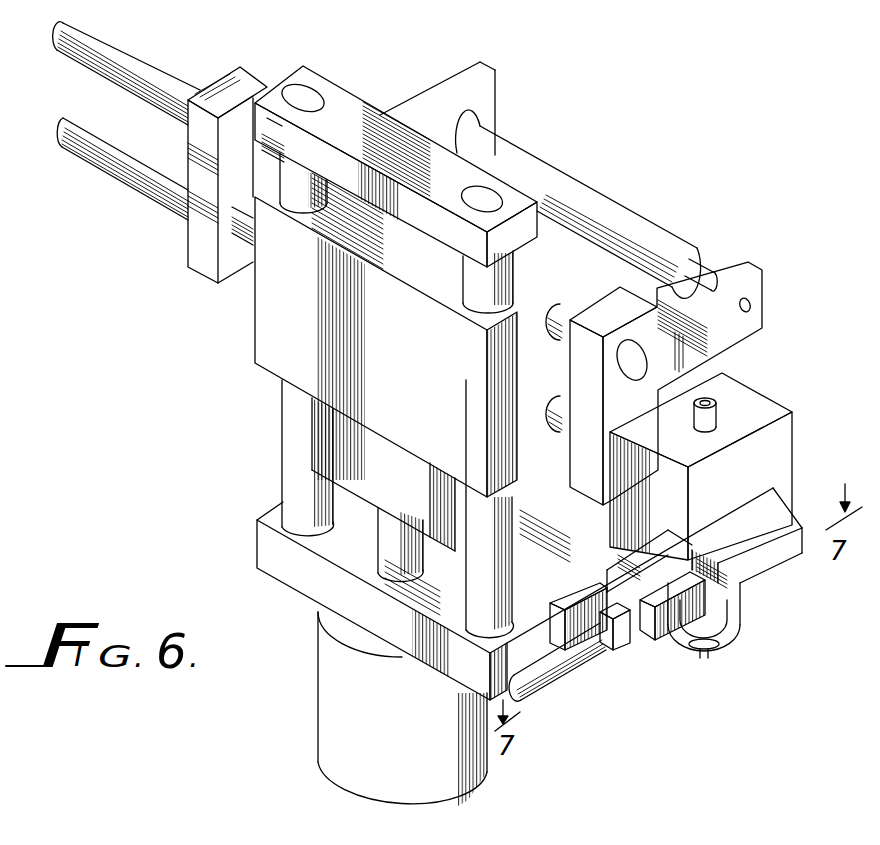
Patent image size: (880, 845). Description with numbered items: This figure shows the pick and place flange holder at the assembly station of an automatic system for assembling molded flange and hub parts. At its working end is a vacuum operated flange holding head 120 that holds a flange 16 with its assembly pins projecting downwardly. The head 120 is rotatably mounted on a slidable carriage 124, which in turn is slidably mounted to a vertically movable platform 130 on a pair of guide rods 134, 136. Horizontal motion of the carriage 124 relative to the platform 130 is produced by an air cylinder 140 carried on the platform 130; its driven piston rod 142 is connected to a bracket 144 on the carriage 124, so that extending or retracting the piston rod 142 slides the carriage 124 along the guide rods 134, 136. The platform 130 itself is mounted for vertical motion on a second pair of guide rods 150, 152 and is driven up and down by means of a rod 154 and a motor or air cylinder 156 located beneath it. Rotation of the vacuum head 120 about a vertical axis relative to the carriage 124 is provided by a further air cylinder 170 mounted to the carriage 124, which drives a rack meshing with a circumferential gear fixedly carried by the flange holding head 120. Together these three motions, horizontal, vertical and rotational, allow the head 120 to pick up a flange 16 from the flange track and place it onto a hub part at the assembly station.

The guide rod 134 is at (147, 63).
The guide rod 136 is at (132, 188).
The vertically movable platform 130 is at (255, 337).
The guide rod 150 is at (288, 468).
The rod 154 is at (382, 538).
The guide rod 152 is at (516, 577).
The motor or air cylinder 156 is at (323, 710).
The air cylinder 140 is at (596, 196).
The driven piston rod 142 is at (707, 277).
The bracket 144 is at (755, 292).
The slidable carriage 124 is at (765, 407).
The vacuum operated flange holding head 120 is at (740, 623).
The flange 16 is at (695, 648).
The air cylinder 170 is at (562, 678).